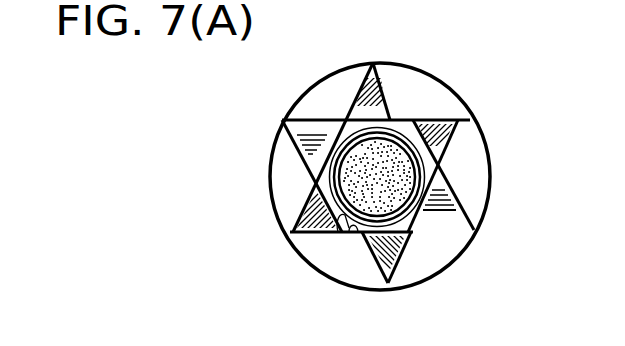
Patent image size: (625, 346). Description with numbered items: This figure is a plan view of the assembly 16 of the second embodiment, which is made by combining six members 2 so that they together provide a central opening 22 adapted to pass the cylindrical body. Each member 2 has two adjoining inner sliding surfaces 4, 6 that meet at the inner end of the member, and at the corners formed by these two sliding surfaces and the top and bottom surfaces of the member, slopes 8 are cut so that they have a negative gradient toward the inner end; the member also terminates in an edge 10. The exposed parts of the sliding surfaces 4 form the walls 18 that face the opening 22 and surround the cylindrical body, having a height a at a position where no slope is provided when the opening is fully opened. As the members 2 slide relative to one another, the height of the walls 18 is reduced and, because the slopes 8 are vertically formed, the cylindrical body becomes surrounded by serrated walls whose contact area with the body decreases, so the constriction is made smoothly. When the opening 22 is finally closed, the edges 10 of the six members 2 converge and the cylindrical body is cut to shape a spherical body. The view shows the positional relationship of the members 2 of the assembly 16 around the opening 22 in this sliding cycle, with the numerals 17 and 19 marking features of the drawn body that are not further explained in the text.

The member 2 is at (427, 254).
The sliding surface 4 is at (335, 233).
The sliding surface 6 is at (292, 236).
The slopes 8 is at (378, 113).
The edge 10 is at (357, 236).
The assembly 16 is at (284, 81).
The sleeve 17 is at (419, 180).
The walls 18 is at (404, 130).
The core member 19 is at (394, 171).
The opening 22 is at (315, 188).